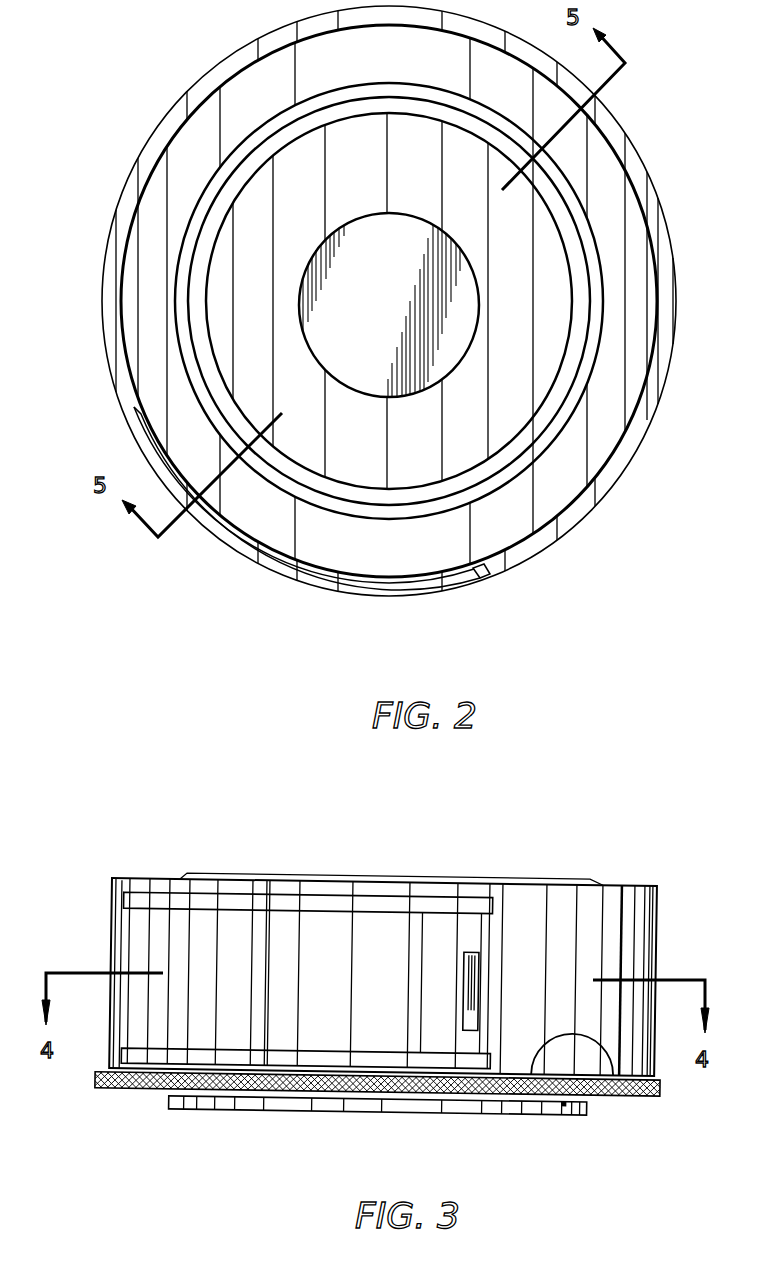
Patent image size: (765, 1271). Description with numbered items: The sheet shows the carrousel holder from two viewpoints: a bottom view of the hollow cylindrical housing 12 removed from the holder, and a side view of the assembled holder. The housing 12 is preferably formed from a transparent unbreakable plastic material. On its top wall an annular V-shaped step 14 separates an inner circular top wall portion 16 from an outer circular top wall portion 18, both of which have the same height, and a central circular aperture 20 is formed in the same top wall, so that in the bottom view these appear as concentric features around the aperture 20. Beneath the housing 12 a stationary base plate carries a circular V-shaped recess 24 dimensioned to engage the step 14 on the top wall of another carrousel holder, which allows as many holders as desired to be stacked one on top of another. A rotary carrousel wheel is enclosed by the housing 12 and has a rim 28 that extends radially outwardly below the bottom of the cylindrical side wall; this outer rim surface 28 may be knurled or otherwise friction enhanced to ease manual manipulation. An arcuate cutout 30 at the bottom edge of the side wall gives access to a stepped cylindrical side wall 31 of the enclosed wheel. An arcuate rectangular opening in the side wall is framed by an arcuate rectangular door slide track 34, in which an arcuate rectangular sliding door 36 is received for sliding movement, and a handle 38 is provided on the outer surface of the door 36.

In FIG. 2, the hollow cylindrical housing 12 is at (628, 453).
In FIG. 3, the hollow cylindrical housing 12 is at (613, 890).
In FIG. 2, the annular V-shaped step 14 is at (197, 242).
In FIG. 2, the inner circular top wall portion 16 is at (237, 312).
In FIG. 2, the outer circular top wall portion 18 is at (208, 113).
In FIG. 2, the central circular aperture 20 is at (372, 317).
In FIG. 3, the circular V-shaped recess 24 is at (170, 1103).
In FIG. 3, the rim 28 is at (98, 1080).
In FIG. 3, the arcuate cutout 30 is at (603, 1058).
In FIG. 3, the stepped cylindrical side wall 31 is at (599, 1092).
In FIG. 2, the arcuate rectangular door slide track 34 is at (280, 556).
In FIG. 3, the arcuate rectangular door slide track 34 is at (318, 896).
In FIG. 3, the arcuate rectangular sliding door 36 is at (372, 924).
In FIG. 3, the handle 38 is at (467, 944).